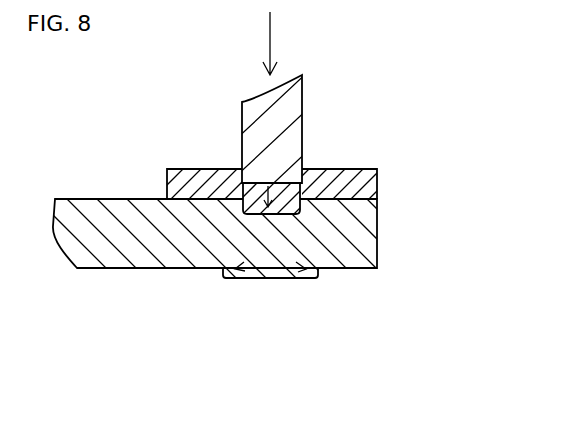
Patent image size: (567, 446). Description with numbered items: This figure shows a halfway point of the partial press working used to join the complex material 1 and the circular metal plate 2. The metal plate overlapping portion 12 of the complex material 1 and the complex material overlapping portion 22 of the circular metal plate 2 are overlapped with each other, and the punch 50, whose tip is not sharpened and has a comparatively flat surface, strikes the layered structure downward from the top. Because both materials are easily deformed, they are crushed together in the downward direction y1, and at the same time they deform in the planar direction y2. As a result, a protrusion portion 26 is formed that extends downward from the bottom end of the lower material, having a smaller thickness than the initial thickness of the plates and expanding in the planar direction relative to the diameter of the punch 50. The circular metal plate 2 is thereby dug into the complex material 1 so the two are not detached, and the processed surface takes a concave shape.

The complex material 1 is at (378, 237).
The circular metal plate 2 is at (378, 186).
The metal plate overlapping portion 12 is at (358, 269).
The complex material overlapping portion 22 is at (362, 170).
The protrusion portion 26 is at (276, 279).
The punch 50 is at (303, 97).
The downward crushing direction y1 is at (325, 180).
The planar deformation direction y2 is at (248, 238).